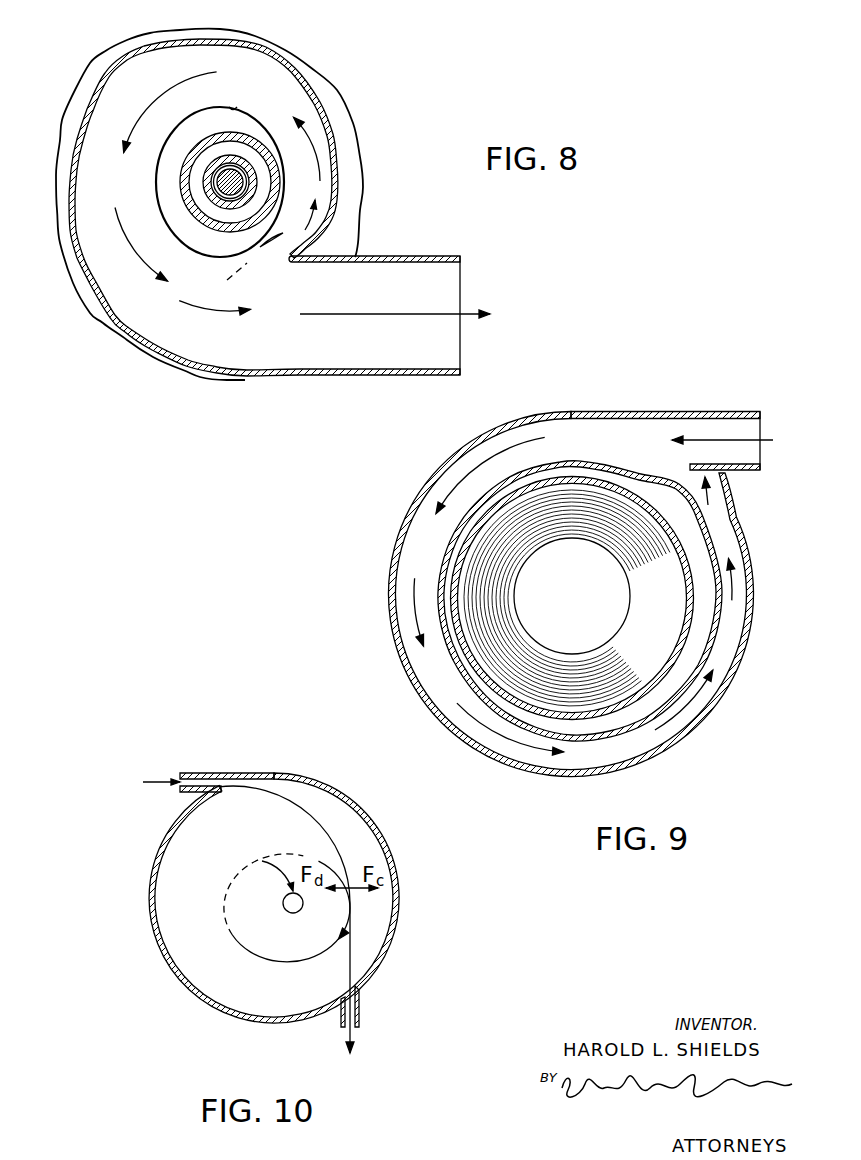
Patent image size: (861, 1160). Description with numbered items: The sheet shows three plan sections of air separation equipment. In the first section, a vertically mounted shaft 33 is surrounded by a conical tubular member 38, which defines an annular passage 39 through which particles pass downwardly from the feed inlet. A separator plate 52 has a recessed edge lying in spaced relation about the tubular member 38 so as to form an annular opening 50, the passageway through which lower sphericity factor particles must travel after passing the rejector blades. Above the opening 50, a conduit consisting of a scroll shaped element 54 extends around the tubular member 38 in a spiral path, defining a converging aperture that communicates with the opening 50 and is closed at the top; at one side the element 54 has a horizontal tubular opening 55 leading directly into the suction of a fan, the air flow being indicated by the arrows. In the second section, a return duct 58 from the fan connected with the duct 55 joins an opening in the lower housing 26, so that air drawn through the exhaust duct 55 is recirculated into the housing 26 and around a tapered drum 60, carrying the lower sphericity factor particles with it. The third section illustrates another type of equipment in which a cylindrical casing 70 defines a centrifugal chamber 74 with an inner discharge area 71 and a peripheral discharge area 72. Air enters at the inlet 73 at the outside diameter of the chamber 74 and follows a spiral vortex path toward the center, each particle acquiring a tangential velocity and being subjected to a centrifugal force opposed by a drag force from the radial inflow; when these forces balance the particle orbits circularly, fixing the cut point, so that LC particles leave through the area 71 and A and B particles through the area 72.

In FIG. 9, the housing 26 is at (392, 600).
In FIG. 8, the shaft 33 is at (217, 180).
In FIG. 8, the conical tubular member 38 is at (204, 138).
In FIG. 8, the annular passage 39 is at (197, 208).
In FIG. 8, the annular opening 50 is at (234, 108).
In FIG. 8, the separator plate 52 is at (83, 163).
In FIG. 8, the scroll shaped element 54 is at (123, 323).
In FIG. 8, the tubular opening 55 is at (403, 256).
In FIG. 9, the return duct 58 is at (670, 411).
In FIG. 9, the tapered drum 60 is at (482, 672).
In FIG. 10, the cylindrical casing 70 is at (390, 852).
In FIG. 10, the inner discharge area 71 is at (301, 909).
In FIG. 10, the peripheral discharge area 72 is at (361, 1016).
In FIG. 10, the air inlet 73 is at (205, 776).
In FIG. 10, the centrifugal chamber 74 is at (307, 820).